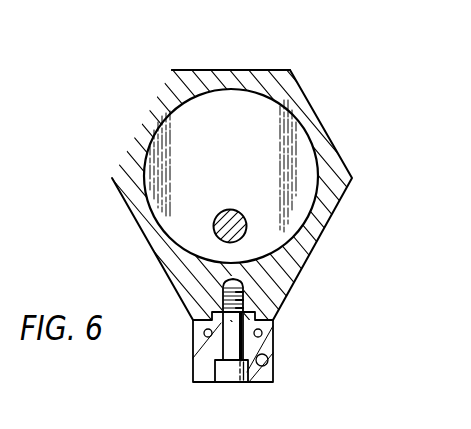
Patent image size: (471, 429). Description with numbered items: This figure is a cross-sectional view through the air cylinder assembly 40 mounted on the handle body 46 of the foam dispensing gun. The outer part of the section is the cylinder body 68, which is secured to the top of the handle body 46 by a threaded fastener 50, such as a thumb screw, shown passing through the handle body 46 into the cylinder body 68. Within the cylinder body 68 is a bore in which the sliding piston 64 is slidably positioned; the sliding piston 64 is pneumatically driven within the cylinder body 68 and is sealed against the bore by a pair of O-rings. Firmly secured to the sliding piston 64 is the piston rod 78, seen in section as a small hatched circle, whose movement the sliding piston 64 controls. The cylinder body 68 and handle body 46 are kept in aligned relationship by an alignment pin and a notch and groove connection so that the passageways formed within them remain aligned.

The air cylinder assembly 40 is at (153, 101).
The cylinder body 68 is at (245, 68).
The sliding piston 64 is at (268, 110).
The piston rod 78 is at (233, 210).
The handle body 46 is at (193, 363).
The threaded fastener 50 is at (237, 383).